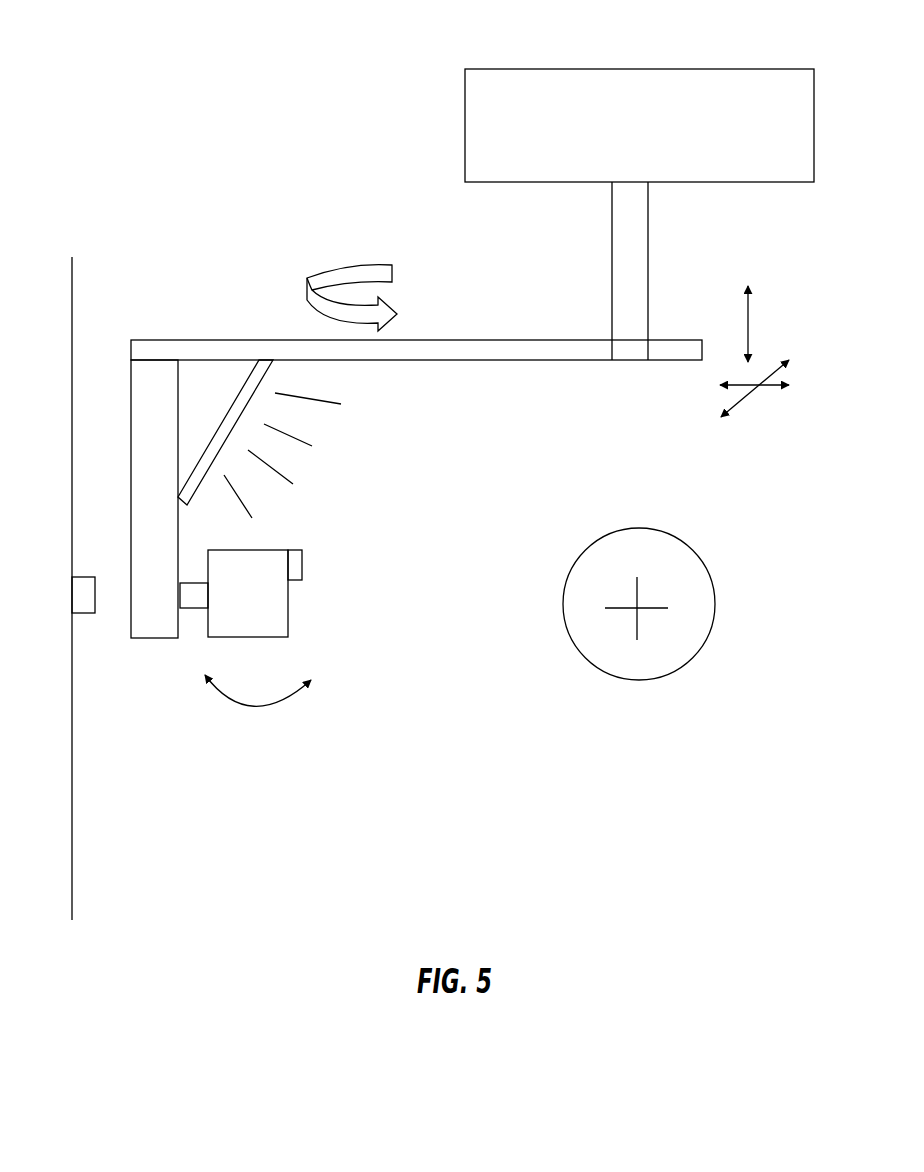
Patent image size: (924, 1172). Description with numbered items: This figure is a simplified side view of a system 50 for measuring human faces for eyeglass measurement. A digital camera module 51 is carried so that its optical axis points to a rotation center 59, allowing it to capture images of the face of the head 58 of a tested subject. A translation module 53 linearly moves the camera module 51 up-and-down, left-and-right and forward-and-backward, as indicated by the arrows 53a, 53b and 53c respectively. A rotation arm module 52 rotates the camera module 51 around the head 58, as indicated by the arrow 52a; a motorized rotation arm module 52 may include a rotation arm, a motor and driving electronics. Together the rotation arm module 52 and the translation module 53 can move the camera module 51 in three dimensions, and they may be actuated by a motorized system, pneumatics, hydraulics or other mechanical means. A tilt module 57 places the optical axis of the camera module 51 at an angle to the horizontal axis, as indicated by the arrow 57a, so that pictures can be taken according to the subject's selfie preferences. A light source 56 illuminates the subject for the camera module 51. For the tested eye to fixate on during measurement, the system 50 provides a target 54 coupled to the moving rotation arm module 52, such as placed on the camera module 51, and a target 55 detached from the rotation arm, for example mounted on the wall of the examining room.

The system 50 is at (116, 88).
The digital camera module 51 is at (288, 613).
The rotation arm module 52 is at (417, 340).
The arrow indicating rotation 52a is at (333, 270).
The translation module 53 is at (814, 130).
The arrow indicating up-and-down movement 53a is at (750, 335).
The arrow indicating left-and-right movement 53b is at (797, 385).
The arrow indicating forward-and-backward movement 53c is at (740, 402).
The target 54 is at (302, 563).
The target 55 is at (72, 600).
The light source 56 is at (233, 402).
The tilt module 57 is at (190, 597).
The arrow indicating tilt 57a is at (252, 713).
The head 58 is at (673, 667).
The rotation center 59 is at (640, 605).